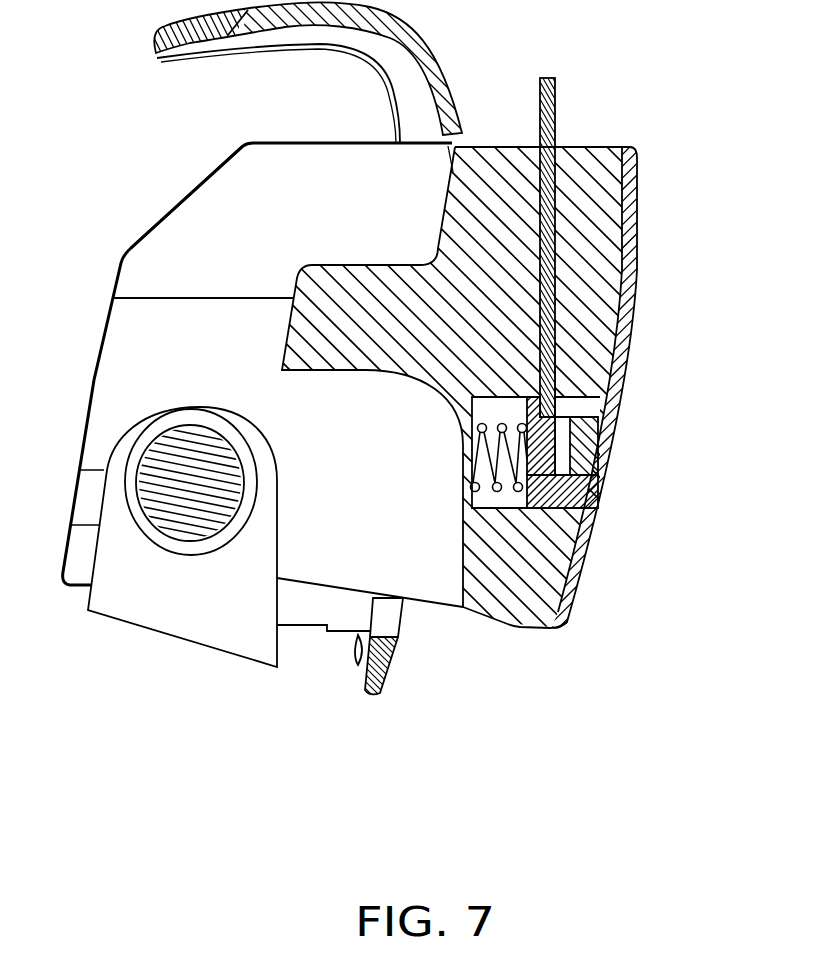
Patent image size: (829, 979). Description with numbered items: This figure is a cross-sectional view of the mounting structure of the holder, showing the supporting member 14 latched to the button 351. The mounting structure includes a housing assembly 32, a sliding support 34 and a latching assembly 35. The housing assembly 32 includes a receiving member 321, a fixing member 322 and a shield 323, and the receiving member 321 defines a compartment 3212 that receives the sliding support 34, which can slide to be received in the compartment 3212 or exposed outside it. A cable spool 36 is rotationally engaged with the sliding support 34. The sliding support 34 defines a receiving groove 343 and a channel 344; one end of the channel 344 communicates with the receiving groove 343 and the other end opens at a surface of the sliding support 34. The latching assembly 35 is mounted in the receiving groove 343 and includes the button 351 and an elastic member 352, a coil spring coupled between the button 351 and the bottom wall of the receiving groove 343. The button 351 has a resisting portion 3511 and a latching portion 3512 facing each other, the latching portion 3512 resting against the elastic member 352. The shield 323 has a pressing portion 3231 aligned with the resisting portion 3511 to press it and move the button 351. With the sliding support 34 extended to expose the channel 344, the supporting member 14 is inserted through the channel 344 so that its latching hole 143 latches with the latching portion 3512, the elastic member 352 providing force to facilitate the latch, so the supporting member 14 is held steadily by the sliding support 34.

The supporting member 14 is at (548, 80).
The latching hole 143 is at (560, 405).
The housing assembly 32 is at (68, 10).
The receiving member 321 is at (212, 176).
The compartment 3212 is at (212, 235).
The fixing member 322 is at (172, 34).
The shield 323 is at (630, 230).
The pressing portion 3231 is at (607, 438).
The sliding support 34 is at (590, 193).
The receiving groove 343 is at (600, 405).
The channel 344 is at (563, 148).
The latching assembly 35 is at (827, 462).
The button 351 is at (750, 418).
The resisting portion 3511 is at (603, 460).
The latching portion 3512 is at (598, 490).
The elastic member 352 is at (587, 538).
The cable spool 36 is at (180, 517).